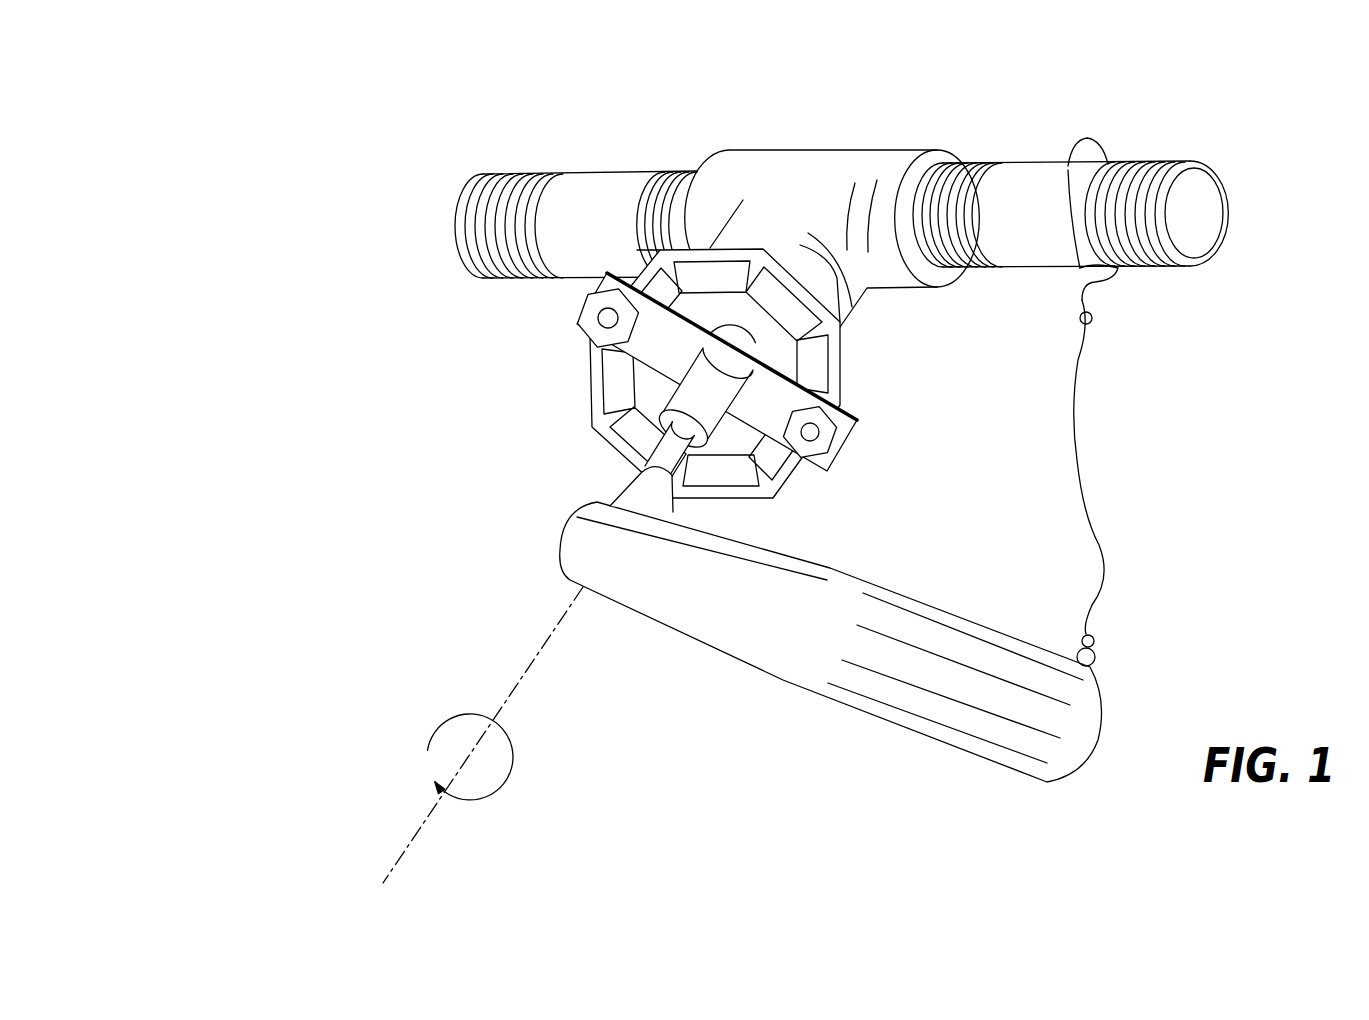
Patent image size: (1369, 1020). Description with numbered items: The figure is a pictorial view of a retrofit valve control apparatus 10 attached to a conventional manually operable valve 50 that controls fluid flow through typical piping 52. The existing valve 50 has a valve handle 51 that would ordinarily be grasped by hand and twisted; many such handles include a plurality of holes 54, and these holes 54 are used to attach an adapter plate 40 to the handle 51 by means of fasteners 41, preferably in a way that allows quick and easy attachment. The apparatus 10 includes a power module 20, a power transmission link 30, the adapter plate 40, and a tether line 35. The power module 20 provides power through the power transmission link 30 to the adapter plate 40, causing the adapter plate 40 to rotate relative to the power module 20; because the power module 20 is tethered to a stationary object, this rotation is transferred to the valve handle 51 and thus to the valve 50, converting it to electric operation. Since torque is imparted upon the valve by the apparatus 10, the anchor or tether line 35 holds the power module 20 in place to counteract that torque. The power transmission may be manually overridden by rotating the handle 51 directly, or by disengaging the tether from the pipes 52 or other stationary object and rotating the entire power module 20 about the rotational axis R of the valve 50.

The retrofit valve control apparatus 10 is at (610, 480).
The power module 20 is at (792, 647).
The power transmission link 30 is at (600, 457).
The tether line 35 is at (1076, 472).
The adapter plate 40 is at (755, 408).
The fastener 41 is at (583, 311).
The valve 50 is at (808, 165).
The valve handle 51 is at (842, 385).
The piping 52 is at (592, 168).
The holes 54 is at (812, 360).
The rotational axis R is at (440, 735).